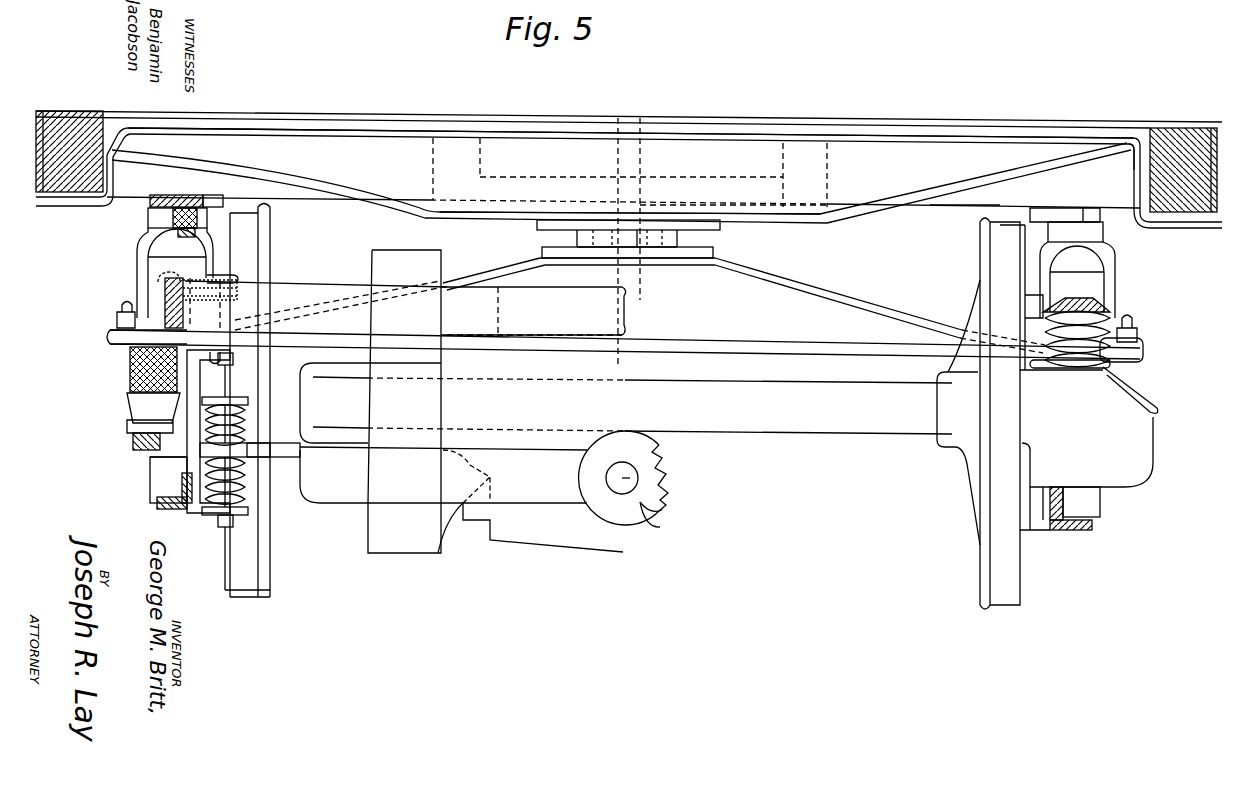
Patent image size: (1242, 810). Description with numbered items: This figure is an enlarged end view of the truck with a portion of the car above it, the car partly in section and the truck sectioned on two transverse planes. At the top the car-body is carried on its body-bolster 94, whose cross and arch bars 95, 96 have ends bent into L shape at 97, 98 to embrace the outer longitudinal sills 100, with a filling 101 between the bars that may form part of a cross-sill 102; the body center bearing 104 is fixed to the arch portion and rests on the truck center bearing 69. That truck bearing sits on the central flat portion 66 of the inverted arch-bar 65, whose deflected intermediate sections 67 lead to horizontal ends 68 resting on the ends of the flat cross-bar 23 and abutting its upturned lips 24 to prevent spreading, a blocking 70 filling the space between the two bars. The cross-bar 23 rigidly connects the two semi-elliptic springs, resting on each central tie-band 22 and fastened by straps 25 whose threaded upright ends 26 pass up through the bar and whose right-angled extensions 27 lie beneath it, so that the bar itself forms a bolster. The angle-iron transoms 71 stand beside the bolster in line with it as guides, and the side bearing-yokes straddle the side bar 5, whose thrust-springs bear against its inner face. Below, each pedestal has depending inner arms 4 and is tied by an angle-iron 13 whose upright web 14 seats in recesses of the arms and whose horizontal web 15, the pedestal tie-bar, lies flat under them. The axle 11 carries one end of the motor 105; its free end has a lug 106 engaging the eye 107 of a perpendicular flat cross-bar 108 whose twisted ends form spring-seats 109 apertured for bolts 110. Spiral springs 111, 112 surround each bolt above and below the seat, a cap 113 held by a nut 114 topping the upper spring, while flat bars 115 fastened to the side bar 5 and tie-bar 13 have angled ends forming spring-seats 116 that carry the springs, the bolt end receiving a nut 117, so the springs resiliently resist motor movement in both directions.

The inner box-controlling arm 4 is at (150, 478).
The side bar or upper chord 5 is at (160, 290).
The axle 11 is at (443, 401).
The angle-iron (pedestal tie-bar) 13 is at (194, 514).
The upright web 14 is at (182, 487).
The horizontal web 15 is at (172, 510).
The central tie-band 22 is at (128, 360).
The cross-bar (flat bar) 23 is at (802, 352).
The upturned lip 24 is at (112, 338).
The strap 25 is at (128, 396).
The upwardly-extended strap end 26 is at (118, 305).
The right-angled strap extension 27 is at (209, 369).
The inverted arch-bar 65 is at (880, 302).
The central flat portion 66 is at (680, 266).
The deflected intermediate section 67 is at (880, 305).
The horizontal end 68 is at (1135, 352).
The truck center bearing 69 is at (713, 253).
The blocking 70 is at (632, 373).
The transom 71 is at (533, 311).
The body-bolster 94 is at (947, 226).
The cross bar of body-bolster 95 is at (968, 136).
The arch bar of body-bolster 96 is at (1030, 176).
The L-shaped end of cross bar 97 is at (1138, 182).
The L-shaped end of arch bar 98 is at (1216, 230).
The outer longitudinal sill 100 is at (1190, 212).
The filling 101 is at (722, 215).
The cross-sill 102 is at (112, 151).
The body center bearing 104 is at (537, 226).
The motor 105 is at (543, 527).
The outwardly-extending lug 106 is at (630, 478).
The eye 107 is at (672, 515).
The cross-bar 108 is at (591, 478).
The spring-seat 109 is at (300, 452).
The bolt 110 is at (252, 440).
The upper spiral spring 111 is at (246, 420).
The lower spiral spring 112 is at (245, 485).
The cap 113 is at (248, 400).
The nut 114 is at (232, 397).
The flat bar 115 is at (168, 451).
The spring-seat 116 is at (225, 512).
The nut 117 is at (230, 528).